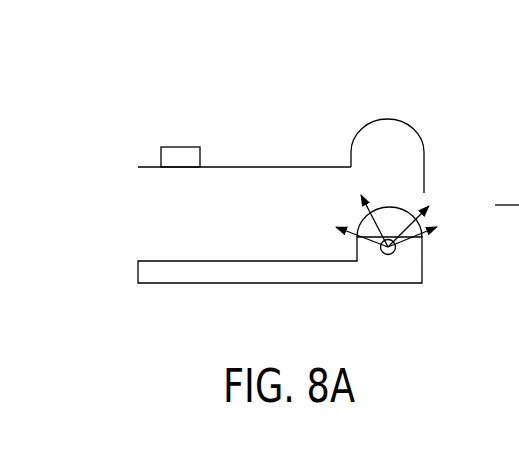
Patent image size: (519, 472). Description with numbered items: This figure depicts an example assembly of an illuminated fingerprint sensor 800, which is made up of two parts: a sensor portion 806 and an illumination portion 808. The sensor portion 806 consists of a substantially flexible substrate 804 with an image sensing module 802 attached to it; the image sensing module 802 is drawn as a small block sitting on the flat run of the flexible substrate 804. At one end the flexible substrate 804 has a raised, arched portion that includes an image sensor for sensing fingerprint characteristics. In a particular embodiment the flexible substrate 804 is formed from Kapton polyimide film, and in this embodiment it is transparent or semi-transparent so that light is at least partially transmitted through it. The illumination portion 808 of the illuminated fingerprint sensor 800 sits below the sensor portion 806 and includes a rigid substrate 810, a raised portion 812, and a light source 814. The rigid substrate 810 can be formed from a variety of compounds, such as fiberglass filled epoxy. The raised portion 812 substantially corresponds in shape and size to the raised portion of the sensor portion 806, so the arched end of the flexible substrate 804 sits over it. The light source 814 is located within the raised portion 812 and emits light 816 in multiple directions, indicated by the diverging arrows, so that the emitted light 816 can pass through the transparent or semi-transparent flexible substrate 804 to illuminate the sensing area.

The illuminated fingerprint sensor 800 is at (151, 116).
The image sensing module 802 is at (183, 147).
The flexible substrate 804 is at (248, 167).
The sensor portion 806 is at (414, 100).
The illumination portion 808 is at (123, 304).
The rigid substrate 810 is at (200, 270).
The raised portion 812 is at (429, 249).
The light source 814 is at (388, 255).
The light 816 is at (365, 216).